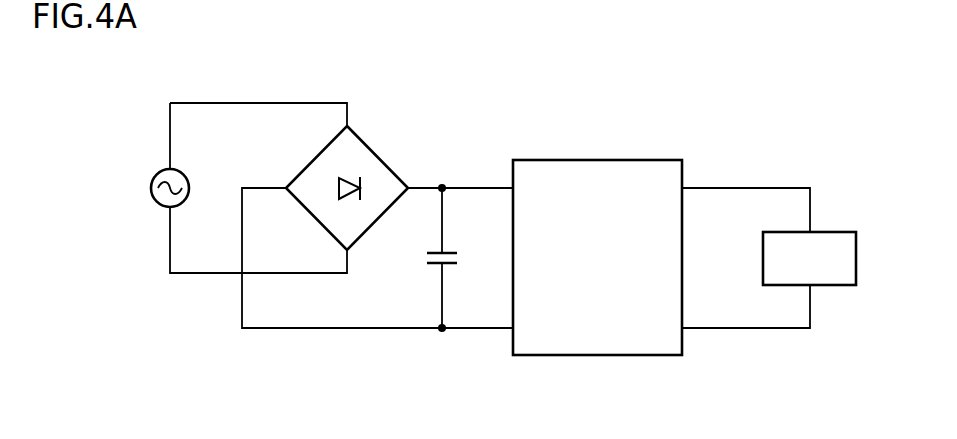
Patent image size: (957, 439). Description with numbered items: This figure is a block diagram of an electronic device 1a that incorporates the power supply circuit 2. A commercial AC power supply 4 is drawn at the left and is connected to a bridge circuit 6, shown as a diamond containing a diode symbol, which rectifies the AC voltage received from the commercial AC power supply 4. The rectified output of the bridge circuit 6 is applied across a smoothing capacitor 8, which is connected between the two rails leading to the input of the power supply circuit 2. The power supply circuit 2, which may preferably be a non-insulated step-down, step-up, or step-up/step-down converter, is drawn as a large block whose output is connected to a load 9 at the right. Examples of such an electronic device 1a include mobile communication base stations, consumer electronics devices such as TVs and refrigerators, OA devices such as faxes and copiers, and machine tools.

The electronic device 1a is at (780, 88).
The power supply circuit 2 is at (605, 357).
The commercial AC power supply 4 is at (152, 198).
The bridge circuit 6 is at (377, 148).
The smoothing capacitor 8 is at (422, 258).
The load 9 is at (835, 232).